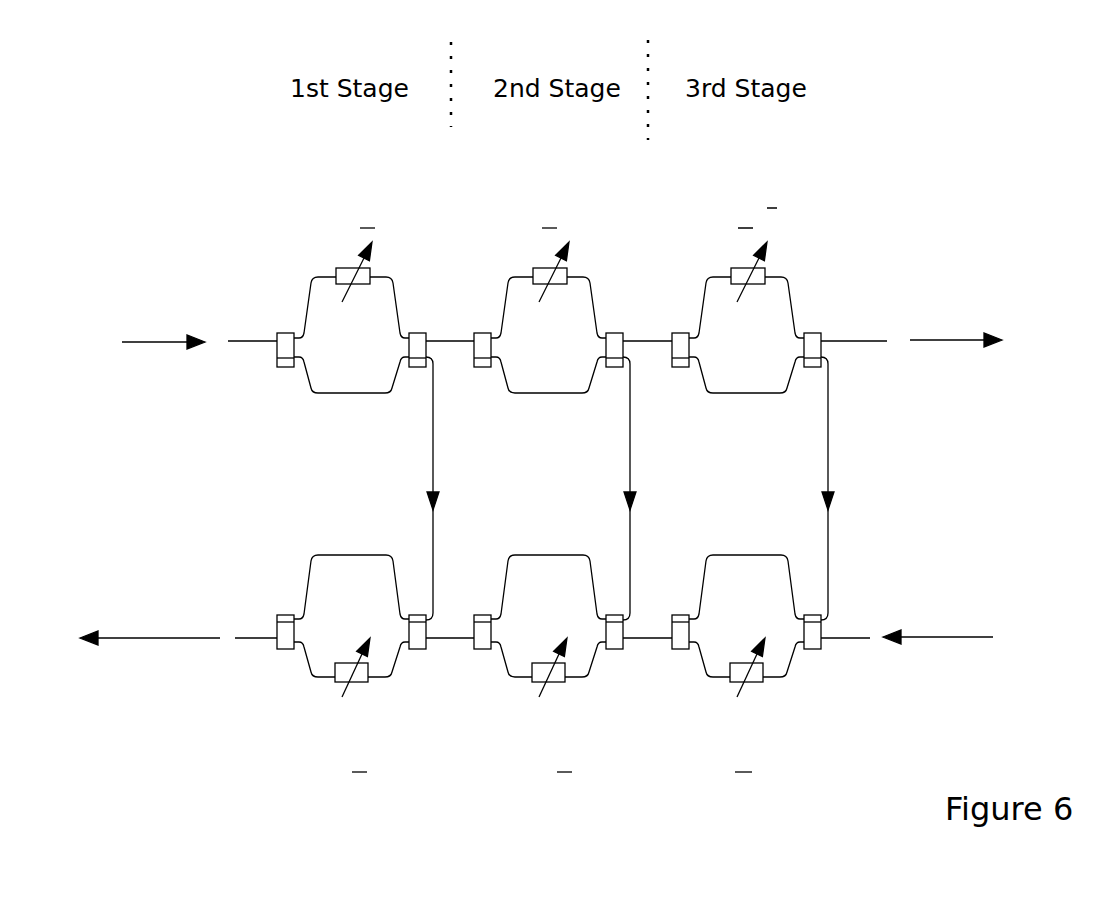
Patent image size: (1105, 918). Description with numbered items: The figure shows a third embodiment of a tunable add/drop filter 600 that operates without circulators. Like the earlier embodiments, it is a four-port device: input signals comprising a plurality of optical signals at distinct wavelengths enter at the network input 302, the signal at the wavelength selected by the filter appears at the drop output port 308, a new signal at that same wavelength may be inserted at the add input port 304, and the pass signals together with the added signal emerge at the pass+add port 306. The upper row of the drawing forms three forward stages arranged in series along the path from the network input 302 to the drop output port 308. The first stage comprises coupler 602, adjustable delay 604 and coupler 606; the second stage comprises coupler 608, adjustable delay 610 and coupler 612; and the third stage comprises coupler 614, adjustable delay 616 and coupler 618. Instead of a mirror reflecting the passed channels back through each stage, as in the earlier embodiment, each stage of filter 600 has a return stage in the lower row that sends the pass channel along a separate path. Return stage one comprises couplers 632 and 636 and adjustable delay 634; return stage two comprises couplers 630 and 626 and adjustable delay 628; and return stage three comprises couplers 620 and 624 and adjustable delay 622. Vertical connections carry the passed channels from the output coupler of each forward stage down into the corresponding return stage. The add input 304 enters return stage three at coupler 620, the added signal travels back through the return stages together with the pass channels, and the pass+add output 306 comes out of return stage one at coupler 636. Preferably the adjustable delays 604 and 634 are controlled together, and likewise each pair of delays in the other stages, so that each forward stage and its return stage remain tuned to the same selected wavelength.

The add/drop filter 600 is at (583, 845).
The network input 302 is at (163, 351).
The add input port 304 is at (938, 623).
The pass+add port 306 is at (150, 615).
The drop output port 308 is at (956, 329).
The coupler 602 is at (287, 367).
The adjustable delay 604 is at (373, 267).
The coupler 606 is at (417, 333).
The coupler 608 is at (480, 367).
The adjustable delay 610 is at (570, 267).
The coupler 612 is at (614, 333).
The coupler 614 is at (682, 367).
The adjustable delay 616 is at (765, 267).
The coupler 618 is at (811, 333).
The coupler 620 is at (810, 615).
The adjustable delay 622 is at (752, 683).
The coupler 624 is at (678, 615).
The coupler 626 is at (613, 615).
The adjustable delay 628 is at (557, 683).
The coupler 630 is at (480, 615).
The coupler 632 is at (418, 615).
The adjustable delay 634 is at (358, 683).
The coupler 636 is at (290, 616).